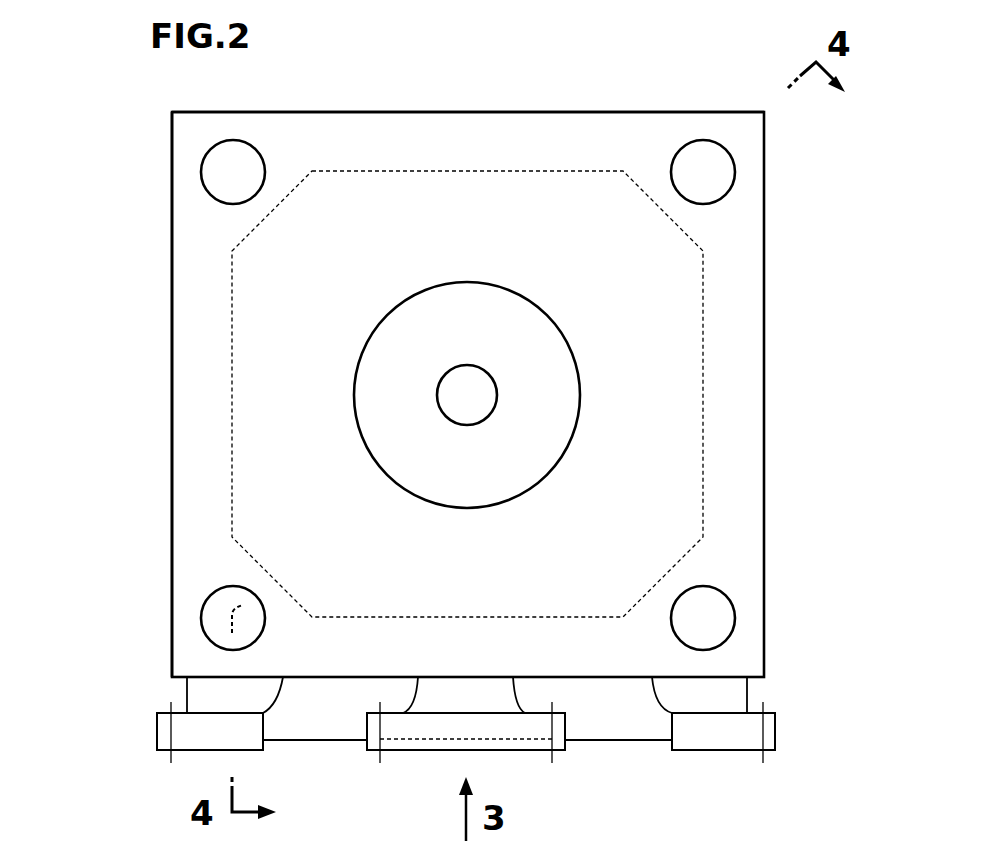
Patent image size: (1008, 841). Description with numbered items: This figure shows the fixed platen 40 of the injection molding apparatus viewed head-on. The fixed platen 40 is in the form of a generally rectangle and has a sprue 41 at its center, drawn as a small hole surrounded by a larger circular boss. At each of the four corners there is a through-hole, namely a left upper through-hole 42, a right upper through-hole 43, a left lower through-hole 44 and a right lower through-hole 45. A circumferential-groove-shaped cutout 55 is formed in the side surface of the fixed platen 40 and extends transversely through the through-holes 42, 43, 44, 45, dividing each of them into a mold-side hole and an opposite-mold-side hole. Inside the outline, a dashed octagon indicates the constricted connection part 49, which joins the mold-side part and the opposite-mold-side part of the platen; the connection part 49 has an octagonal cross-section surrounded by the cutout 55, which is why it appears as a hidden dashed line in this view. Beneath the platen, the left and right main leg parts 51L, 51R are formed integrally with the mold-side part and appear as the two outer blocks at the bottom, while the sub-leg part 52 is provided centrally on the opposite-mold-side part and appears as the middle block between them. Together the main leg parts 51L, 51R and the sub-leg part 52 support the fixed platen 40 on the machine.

The fixed platen 40 is at (606, 98).
The sprue 41 is at (497, 397).
The left upper through-hole 42 is at (205, 180).
The right upper through-hole 43 is at (742, 168).
The left lower through-hole 44 is at (208, 626).
The right lower through-hole 45 is at (756, 612).
The constricted connection part 49 is at (232, 458).
The left main leg part 51L is at (165, 732).
The right main leg part 51R is at (775, 728).
The sub-leg part 52 is at (428, 745).
The circumferential-groove-shaped cutout 55 is at (466, 146).